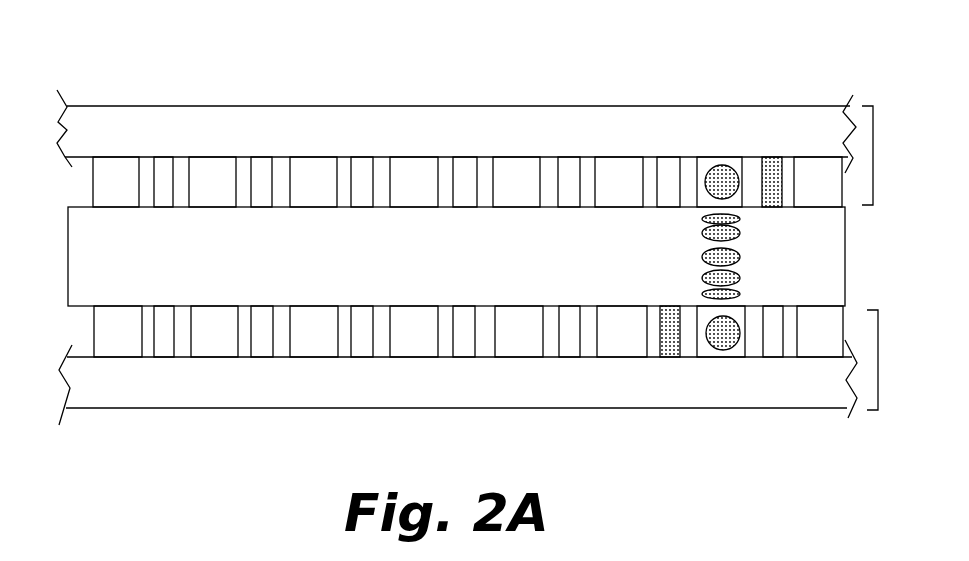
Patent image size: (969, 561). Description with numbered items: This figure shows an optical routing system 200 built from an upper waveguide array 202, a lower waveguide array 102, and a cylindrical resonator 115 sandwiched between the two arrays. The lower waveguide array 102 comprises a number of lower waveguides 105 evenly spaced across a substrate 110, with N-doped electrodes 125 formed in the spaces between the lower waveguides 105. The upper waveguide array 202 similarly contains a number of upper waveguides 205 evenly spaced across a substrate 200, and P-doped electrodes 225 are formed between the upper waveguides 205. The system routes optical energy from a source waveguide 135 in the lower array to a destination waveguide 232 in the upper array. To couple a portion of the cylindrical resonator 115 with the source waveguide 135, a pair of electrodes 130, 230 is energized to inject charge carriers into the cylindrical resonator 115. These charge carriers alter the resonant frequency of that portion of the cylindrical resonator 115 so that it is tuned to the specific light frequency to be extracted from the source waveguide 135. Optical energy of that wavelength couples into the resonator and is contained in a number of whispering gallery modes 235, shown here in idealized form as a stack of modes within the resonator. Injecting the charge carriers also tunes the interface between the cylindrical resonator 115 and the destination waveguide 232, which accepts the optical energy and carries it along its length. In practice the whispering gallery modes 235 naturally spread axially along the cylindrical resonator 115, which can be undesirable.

The optical routing system 200 is at (82, 58).
The upper waveguide array 202 is at (876, 119).
The upper waveguides 205 is at (427, 129).
The P-doped electrodes 225 is at (163, 157).
The electrode 230 is at (772, 165).
The destination waveguide 232 is at (723, 165).
The whispering gallery modes 235 is at (740, 262).
The cylindrical resonator 115 is at (282, 268).
The lower waveguides 105 is at (429, 390).
The N-doped electrodes 125 is at (166, 349).
The electrode 130 is at (667, 357).
The source waveguide 135 is at (723, 350).
The substrate 110 is at (279, 399).
The lower waveguide array 102 is at (879, 408).